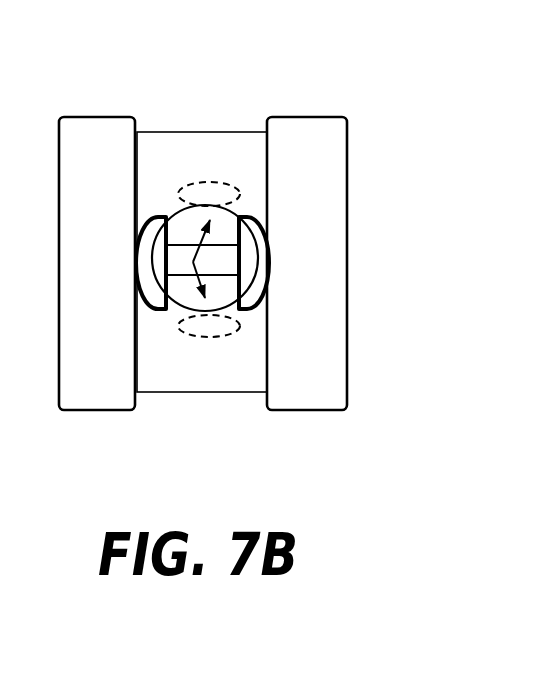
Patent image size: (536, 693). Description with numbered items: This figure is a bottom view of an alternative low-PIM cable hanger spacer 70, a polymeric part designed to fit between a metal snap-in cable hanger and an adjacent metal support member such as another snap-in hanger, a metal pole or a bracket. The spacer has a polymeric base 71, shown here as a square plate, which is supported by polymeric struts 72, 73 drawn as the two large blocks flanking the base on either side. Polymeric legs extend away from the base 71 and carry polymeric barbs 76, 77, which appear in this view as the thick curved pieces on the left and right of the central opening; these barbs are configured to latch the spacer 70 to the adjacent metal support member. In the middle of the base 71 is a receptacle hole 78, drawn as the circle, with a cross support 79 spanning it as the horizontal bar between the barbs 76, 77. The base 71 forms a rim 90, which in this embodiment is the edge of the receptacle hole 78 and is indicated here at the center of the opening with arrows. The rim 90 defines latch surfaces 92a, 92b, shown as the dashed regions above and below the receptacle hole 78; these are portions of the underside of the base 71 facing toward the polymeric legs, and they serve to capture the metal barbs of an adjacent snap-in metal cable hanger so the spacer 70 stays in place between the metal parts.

The low-PIM cable hanger spacer 70 is at (345, 82).
The polymeric base 71 is at (165, 157).
The polymeric strut 72 is at (100, 405).
The right magnet block 73 is at (328, 403).
The polymeric barb 76 is at (153, 285).
The polymeric barb 77 is at (263, 297).
The receptacle hole 78 is at (235, 228).
The cross support 79 is at (220, 265).
The rim 90 is at (192, 263).
The latch surface 92a is at (220, 188).
The latch surface 92b is at (223, 335).